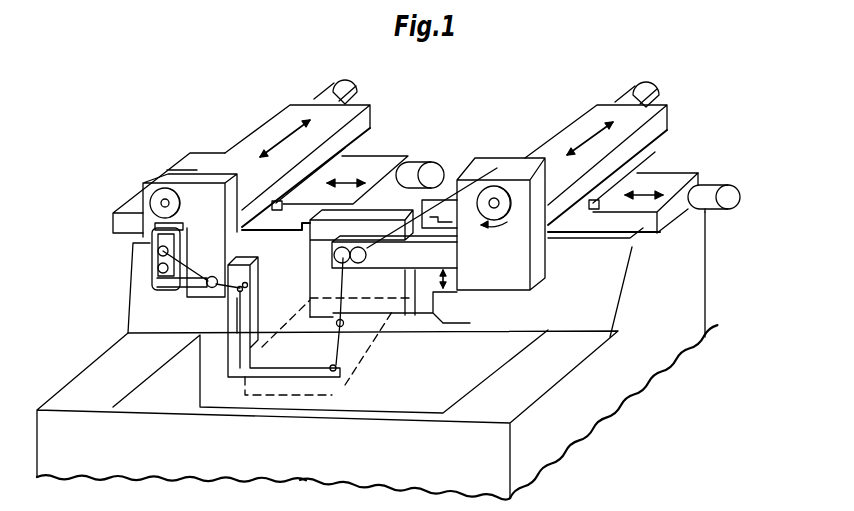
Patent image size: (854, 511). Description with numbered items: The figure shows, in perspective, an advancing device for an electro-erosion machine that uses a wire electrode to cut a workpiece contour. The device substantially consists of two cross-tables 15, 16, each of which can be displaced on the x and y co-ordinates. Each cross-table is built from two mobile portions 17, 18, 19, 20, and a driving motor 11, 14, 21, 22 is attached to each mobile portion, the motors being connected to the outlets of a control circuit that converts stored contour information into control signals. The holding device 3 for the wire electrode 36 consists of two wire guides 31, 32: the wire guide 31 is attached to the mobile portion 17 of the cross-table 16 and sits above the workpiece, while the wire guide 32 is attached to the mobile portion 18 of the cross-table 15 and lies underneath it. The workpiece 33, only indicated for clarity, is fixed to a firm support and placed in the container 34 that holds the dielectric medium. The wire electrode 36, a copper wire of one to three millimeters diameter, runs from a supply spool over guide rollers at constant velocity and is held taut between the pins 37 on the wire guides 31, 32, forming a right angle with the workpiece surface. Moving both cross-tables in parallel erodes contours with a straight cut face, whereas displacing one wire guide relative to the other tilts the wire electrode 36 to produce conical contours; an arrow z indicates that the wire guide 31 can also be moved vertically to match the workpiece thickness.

The holding device 3 is at (96, 314).
The driving motor 11 is at (330, 92).
The driving motor 14 is at (418, 167).
The cross-table 15 is at (265, 106).
The cross-table 16 is at (718, 135).
The mobile portion 17 is at (577, 128).
The mobile portion 18 is at (247, 151).
The mobile portion 19 is at (673, 177).
The mobile portion 20 is at (380, 167).
The driving motor 21 is at (638, 98).
The driving motor 22 is at (717, 187).
The wire guide 31 is at (427, 303).
The wire guide 32 is at (258, 293).
The workpiece 33 is at (332, 395).
The container 34 is at (490, 363).
The wire electrode 36 is at (162, 189).
The pins 37 is at (342, 325).